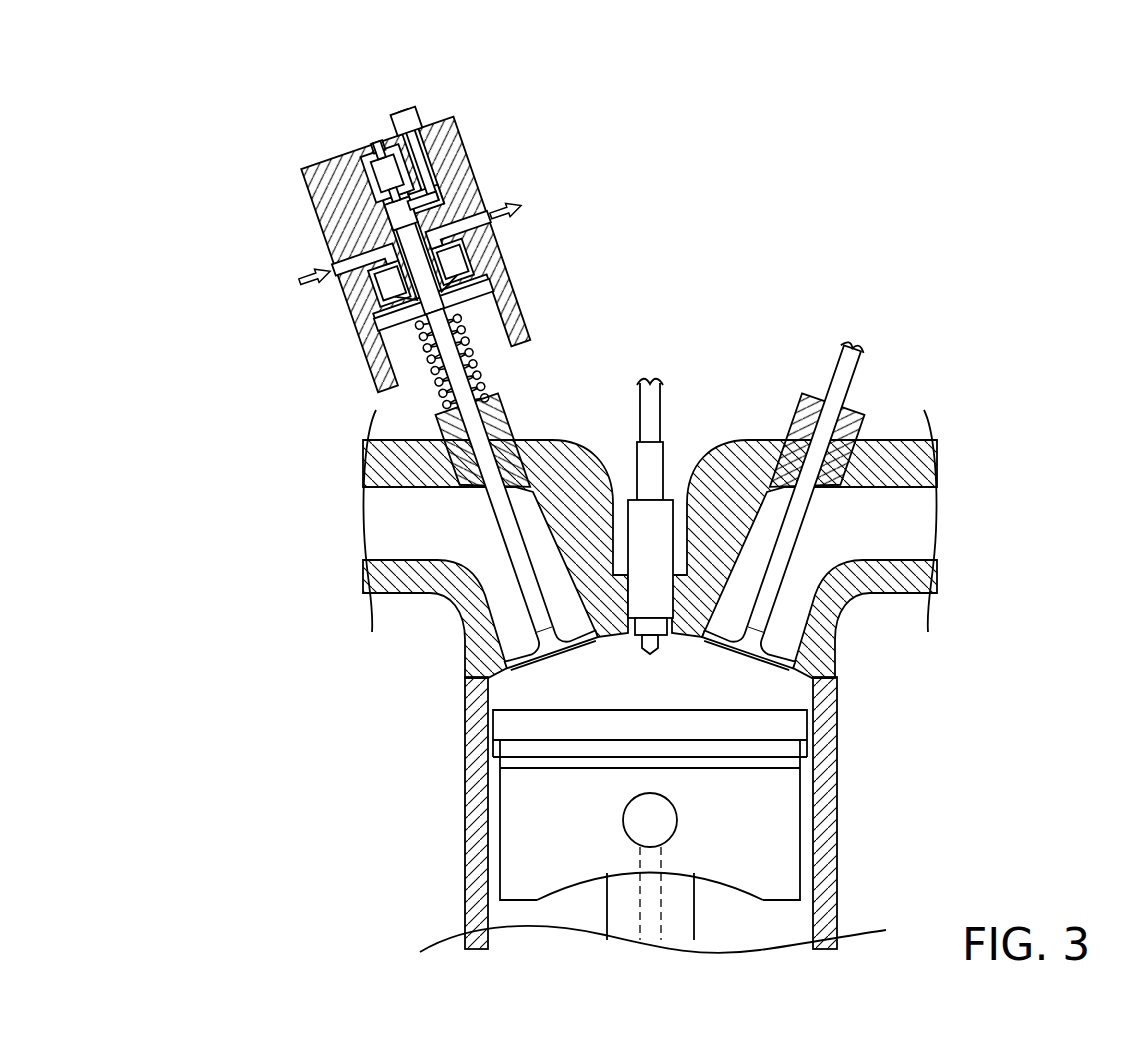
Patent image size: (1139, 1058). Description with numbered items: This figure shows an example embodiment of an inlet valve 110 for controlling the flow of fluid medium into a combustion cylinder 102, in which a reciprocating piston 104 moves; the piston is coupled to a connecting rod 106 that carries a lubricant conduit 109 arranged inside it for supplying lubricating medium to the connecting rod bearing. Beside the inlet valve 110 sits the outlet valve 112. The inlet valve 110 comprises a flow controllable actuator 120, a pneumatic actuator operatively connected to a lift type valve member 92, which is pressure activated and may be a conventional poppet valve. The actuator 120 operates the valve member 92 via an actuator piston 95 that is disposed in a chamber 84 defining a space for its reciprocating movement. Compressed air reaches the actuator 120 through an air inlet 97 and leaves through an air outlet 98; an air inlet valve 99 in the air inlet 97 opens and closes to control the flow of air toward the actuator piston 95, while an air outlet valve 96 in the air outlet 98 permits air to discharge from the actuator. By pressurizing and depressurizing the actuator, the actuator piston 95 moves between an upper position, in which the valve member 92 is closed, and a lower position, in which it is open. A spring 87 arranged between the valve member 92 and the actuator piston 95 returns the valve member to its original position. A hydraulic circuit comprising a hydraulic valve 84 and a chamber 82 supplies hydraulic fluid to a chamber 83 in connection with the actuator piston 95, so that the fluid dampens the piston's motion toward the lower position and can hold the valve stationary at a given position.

The chamber 82 is at (404, 108).
The chamber 84 is at (380, 158).
The flow controllable actuator 120 is at (425, 207).
The chamber 83 is at (403, 213).
The air outlet 98 is at (482, 226).
The air outlet valve 96 is at (462, 252).
The actuator piston 95 is at (482, 297).
The inlet valve 110 is at (439, 352).
The air inlet 97 is at (358, 295).
The air inlet valve 99 is at (372, 312).
The spring 87 is at (483, 383).
The valve member 92 is at (500, 412).
The outlet valve 112 is at (898, 356).
The reciprocating piston 104 is at (654, 825).
The combustion cylinder 102 is at (840, 848).
The connecting rod 106 is at (683, 913).
The lubricant conduit 109 is at (650, 903).